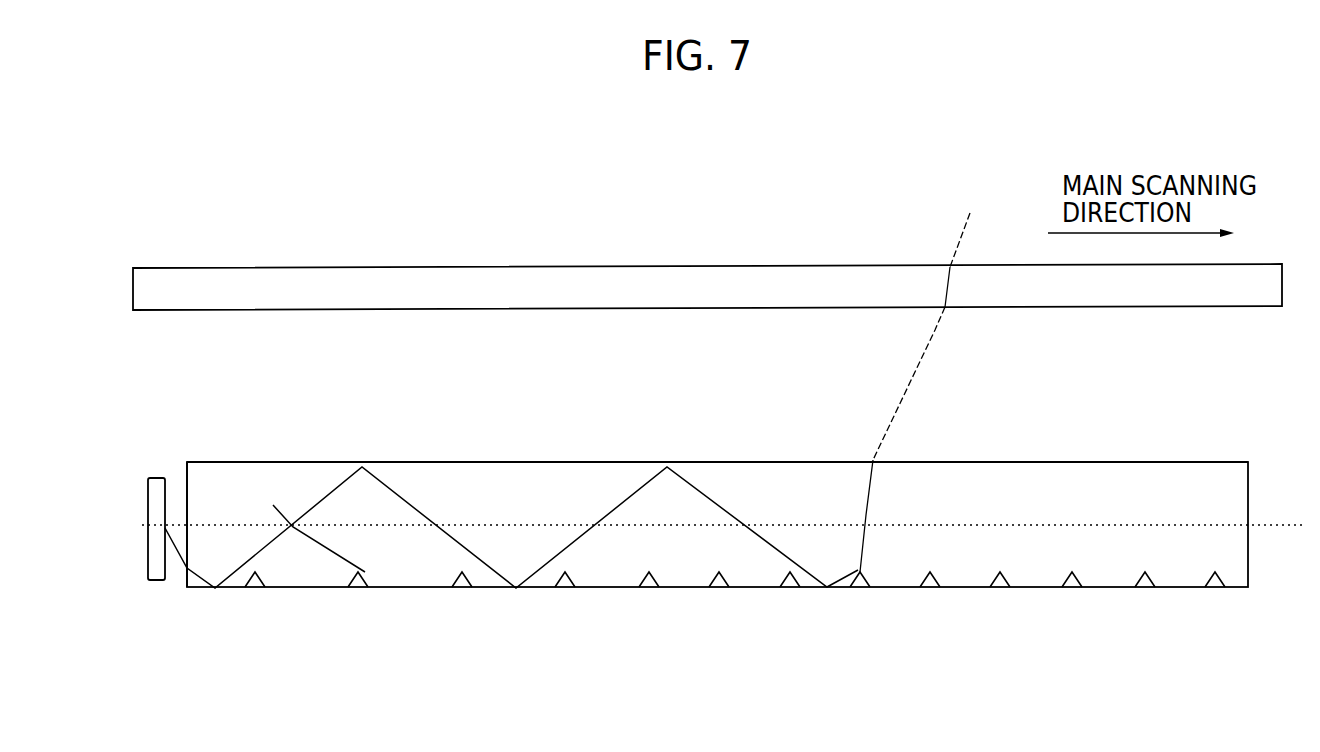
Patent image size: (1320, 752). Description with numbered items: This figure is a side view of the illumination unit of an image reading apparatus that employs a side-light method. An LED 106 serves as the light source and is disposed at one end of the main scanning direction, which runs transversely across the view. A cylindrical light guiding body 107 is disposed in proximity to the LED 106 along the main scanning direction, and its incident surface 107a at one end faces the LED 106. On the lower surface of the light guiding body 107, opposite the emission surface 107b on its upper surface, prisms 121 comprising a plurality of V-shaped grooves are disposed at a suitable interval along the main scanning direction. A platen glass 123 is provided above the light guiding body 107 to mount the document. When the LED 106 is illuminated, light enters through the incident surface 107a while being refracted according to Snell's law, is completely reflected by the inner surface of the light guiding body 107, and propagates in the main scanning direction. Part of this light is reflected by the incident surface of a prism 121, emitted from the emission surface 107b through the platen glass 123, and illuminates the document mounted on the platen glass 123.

The LED 106 is at (160, 476).
The light guiding body 107 is at (1107, 458).
The incident surface 107a is at (178, 503).
The emission surface 107b is at (803, 460).
The prisms 121 is at (262, 578).
The platen glass 123 is at (790, 280).